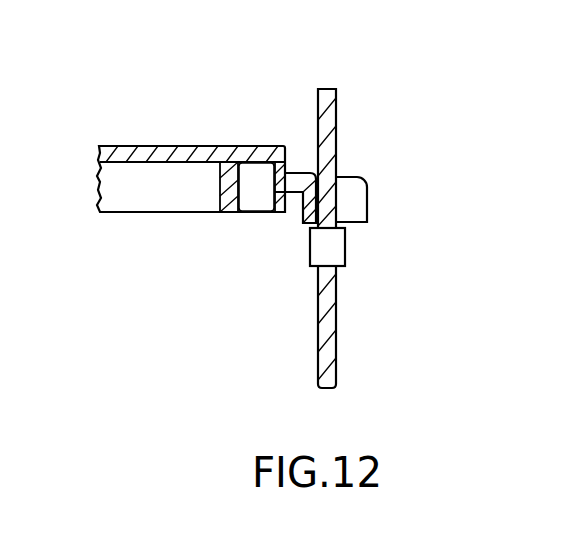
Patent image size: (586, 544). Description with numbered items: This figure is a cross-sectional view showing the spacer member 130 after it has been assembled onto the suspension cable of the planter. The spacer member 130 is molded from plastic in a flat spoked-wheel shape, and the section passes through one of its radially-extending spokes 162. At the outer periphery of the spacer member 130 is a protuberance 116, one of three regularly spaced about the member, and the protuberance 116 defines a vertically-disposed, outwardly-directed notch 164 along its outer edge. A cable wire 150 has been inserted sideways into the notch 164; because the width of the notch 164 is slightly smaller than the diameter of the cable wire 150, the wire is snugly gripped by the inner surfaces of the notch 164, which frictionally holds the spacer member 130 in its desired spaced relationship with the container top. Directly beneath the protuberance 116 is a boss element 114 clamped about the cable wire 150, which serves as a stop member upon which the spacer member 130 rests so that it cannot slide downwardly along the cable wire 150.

The boss element 114 is at (310, 252).
The protuberance 116 is at (300, 173).
The spacer member 130 is at (247, 146).
The cable wire 150 is at (336, 118).
The spoke 162 is at (139, 146).
The notch 164 is at (350, 193).